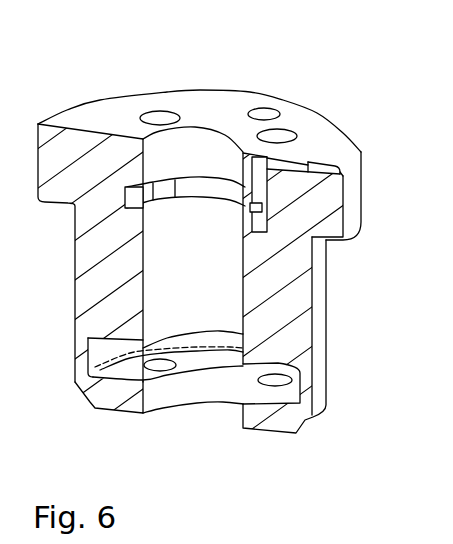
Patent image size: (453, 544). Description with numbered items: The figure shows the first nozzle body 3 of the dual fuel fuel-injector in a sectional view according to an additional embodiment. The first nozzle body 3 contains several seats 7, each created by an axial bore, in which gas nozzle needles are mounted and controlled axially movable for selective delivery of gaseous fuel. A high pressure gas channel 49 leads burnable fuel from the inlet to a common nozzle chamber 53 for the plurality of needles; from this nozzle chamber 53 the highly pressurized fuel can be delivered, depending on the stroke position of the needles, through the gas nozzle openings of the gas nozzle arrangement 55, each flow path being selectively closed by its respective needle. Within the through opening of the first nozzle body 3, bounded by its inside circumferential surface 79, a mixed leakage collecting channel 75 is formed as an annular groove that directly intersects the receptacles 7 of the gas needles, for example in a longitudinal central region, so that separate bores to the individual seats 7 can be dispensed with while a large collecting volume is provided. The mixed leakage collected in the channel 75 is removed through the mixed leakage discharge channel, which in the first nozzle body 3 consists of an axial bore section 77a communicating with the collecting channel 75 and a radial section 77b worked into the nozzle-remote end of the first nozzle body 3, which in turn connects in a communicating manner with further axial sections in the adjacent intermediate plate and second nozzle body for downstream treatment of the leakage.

The first nozzle body 3 is at (98, 113).
The seat 7 is at (162, 115).
The high pressure gas channel 49 is at (265, 108).
The nozzle chamber 53 is at (217, 360).
The gas nozzle arrangement 55 is at (320, 432).
The mixed leakage collecting channel 75 is at (220, 185).
The axial section of mixed leakage discharge channel 77a is at (257, 188).
The radial section of mixed leakage discharge channel 77b is at (293, 167).
The inside circumferential surface 79 is at (157, 274).